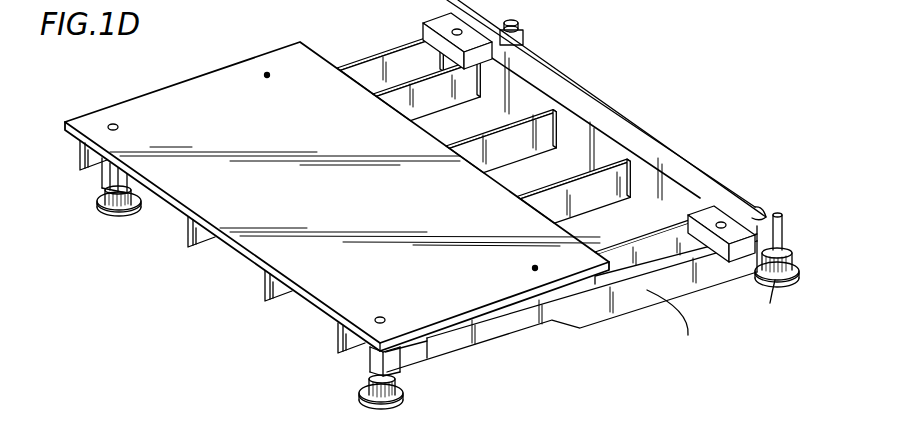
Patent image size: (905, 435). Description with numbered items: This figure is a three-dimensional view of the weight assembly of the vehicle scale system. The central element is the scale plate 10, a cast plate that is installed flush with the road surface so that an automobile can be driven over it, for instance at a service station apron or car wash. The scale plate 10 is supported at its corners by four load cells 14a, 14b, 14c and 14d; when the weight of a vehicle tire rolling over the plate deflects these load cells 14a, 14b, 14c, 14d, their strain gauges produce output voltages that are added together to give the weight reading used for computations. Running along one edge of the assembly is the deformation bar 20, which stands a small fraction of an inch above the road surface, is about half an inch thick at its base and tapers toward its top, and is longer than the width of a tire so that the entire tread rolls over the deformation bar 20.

The scale plate 10 is at (508, 312).
The load cell 14a is at (410, 370).
The load cell 14b is at (102, 177).
The load cell 14c is at (797, 232).
The load cell 14d is at (523, 33).
The deformation bar 20 is at (630, 120).